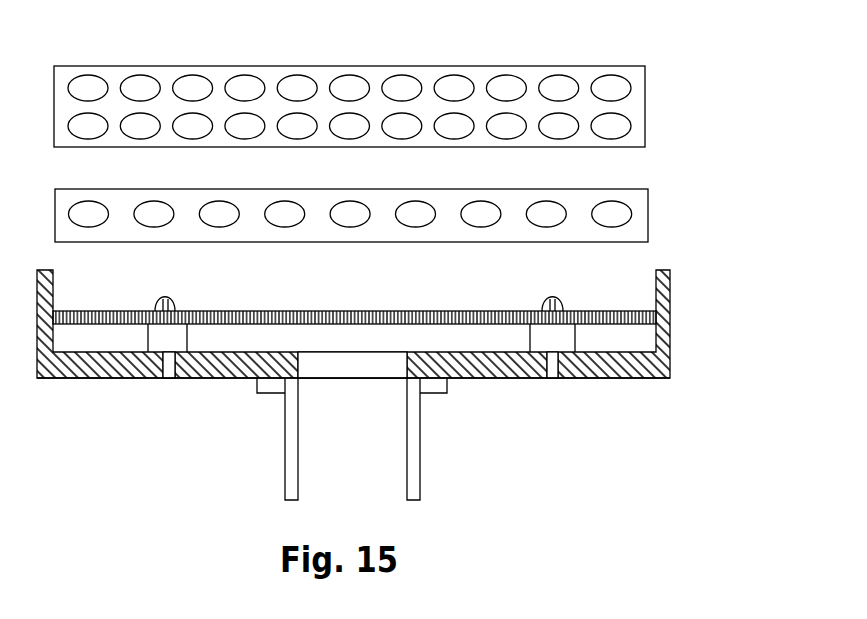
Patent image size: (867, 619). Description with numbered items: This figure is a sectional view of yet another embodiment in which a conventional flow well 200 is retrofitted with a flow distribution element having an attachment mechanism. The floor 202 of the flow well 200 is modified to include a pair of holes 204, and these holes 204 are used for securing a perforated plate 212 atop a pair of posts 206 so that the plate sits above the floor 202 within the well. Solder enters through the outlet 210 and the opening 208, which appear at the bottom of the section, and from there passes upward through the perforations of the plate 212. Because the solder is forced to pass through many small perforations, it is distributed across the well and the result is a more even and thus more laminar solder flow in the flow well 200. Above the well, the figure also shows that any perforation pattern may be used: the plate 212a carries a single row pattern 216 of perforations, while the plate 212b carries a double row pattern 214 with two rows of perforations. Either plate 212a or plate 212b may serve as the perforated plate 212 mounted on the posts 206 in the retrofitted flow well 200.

The flow well 200 is at (405, 383).
The floor 202 is at (650, 373).
The holes 204 is at (165, 380).
The posts 206 is at (173, 333).
The opening 208 is at (358, 378).
The outlet 210 is at (413, 472).
The perforated plate 212 is at (360, 311).
The plate 212a is at (648, 212).
The plate 212b is at (645, 105).
The double row pattern 214 is at (457, 82).
The single row pattern 216 is at (413, 201).